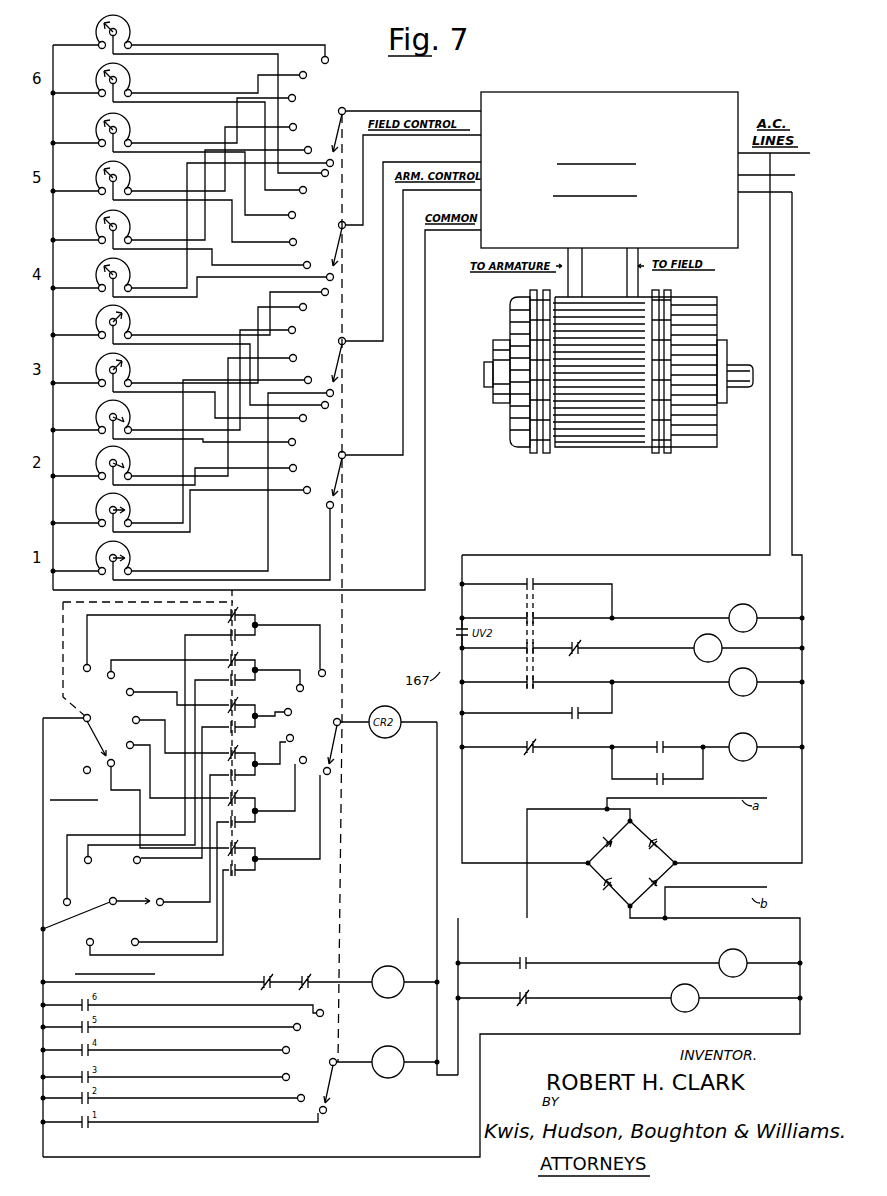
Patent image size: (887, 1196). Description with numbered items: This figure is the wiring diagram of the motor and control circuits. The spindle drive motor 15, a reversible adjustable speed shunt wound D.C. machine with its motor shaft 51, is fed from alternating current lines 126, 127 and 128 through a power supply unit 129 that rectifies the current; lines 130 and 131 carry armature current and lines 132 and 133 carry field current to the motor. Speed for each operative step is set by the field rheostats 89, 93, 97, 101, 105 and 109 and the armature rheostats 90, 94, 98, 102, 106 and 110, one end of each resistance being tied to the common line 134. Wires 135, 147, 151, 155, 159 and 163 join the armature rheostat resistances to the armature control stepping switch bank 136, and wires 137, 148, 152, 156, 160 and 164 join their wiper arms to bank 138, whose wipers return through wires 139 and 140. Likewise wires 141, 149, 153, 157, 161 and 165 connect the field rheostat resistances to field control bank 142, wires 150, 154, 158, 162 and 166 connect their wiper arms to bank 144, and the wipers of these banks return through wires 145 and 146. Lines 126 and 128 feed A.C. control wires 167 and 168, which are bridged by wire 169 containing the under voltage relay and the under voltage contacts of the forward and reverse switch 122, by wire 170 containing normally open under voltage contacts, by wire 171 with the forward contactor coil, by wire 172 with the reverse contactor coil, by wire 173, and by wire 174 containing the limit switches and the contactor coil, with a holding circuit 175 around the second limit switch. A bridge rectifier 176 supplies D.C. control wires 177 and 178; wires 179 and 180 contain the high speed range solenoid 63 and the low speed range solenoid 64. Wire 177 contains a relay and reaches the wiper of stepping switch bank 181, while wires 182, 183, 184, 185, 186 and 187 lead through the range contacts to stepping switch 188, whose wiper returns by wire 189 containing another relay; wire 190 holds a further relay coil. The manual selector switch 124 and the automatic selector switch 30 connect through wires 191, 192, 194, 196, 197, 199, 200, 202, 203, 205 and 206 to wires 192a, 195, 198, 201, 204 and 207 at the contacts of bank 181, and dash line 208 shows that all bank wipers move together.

The spindle drive motor 15 is at (623, 452).
The motor shaft 51 is at (743, 356).
The automatic operative step selector switch 30 is at (140, 916).
The high speed range solenoid 63 is at (740, 977).
The low speed range solenoid 64 is at (695, 1010).
The rheostat 89 is at (98, 508).
The rheostat 90 is at (98, 556).
The rheostat 93 is at (98, 415).
The rheostat 94 is at (98, 461).
The rheostat 97 is at (98, 320).
The rheostat 98 is at (98, 368).
The rheostat 101 is at (101, 225).
The rheostat 102 is at (101, 273).
The rheostat 105 is at (101, 128).
The rheostat 106 is at (101, 176).
The rheostat 109 is at (104, 26).
The rheostat 110 is at (104, 80).
The forward and reverse and neutral switch 122 is at (535, 600).
The manual selector switch 124 is at (120, 690).
The power supply line 126 is at (783, 155).
The power supply line 127 is at (790, 178).
The power supply line 128 is at (800, 194).
The power supply unit 129 is at (680, 100).
The line 130 is at (570, 276).
The line 131 is at (583, 294).
The line 132 is at (628, 300).
The line 133 is at (640, 292).
The common line 134 is at (425, 468).
The wire 135 is at (266, 557).
The automatic stepping switch bank 136 is at (325, 352).
The wire 137 is at (275, 578).
The automatic stepping switch bank 138 is at (325, 466).
The wire 139 is at (383, 292).
The wire 140 is at (403, 416).
The wire 141 is at (182, 516).
The stepping switch bank 142 is at (325, 120).
The stepping switch 144 is at (325, 236).
The wire 145 is at (372, 111).
The wire 146 is at (378, 136).
The wire 147 is at (150, 475).
The wire 148 is at (248, 512).
The wire 149 is at (150, 429).
The wire 150 is at (130, 441).
The wire 151 is at (150, 382).
The wire 152 is at (130, 394).
The wire 153 is at (150, 334).
The wire 154 is at (126, 346).
The wire 155 is at (148, 287).
The wire 156 is at (126, 299).
The wire 157 is at (148, 239).
The wire 158 is at (140, 251).
The wire 159 is at (150, 190).
The wire 160 is at (140, 202).
The wire 161 is at (170, 142).
The wire 162 is at (133, 154).
The wire 163 is at (173, 92).
The wire 164 is at (176, 104).
The wire 165 is at (186, 44).
The wire 166 is at (213, 57).
The wire 167 is at (768, 480).
The wire 168 is at (803, 466).
The wire 169 is at (638, 617).
The wire 170 is at (578, 584).
The wire 171 is at (622, 650).
The wire 172 is at (630, 682).
The wire 173 is at (616, 704).
The wire 174 is at (565, 748).
The holding circuit 175 is at (705, 775).
The bridge rectifier 176 is at (668, 842).
The wire 177 is at (437, 886).
The wire 178 is at (43, 925).
The wire 179 is at (582, 962).
The wire 180 is at (580, 998).
The automatic stepping switch bank 181 is at (318, 724).
The wire 182 is at (136, 1122).
The wire 183 is at (136, 1098).
The wire 184 is at (136, 1077).
The wire 185 is at (136, 1050).
The wire 186 is at (136, 1027).
The wire 187 is at (126, 1005).
The automatic stepping switch 188 is at (318, 1070).
The wire 189 is at (350, 1068).
The wire 190 is at (198, 980).
The wire 191 is at (112, 772).
The wire 192 is at (227, 922).
The wire 192a is at (262, 878).
The wire 194 is at (156, 941).
The wire 195 is at (262, 812).
The wire 196 is at (141, 718).
The wire 197 is at (160, 895).
The wire 198 is at (258, 762).
The wire 199 is at (220, 688).
The wire 200 is at (160, 858).
The wire 201 is at (270, 702).
The wire 202 is at (137, 660).
The wire 203 is at (138, 834).
The wire 204 is at (274, 668).
The wire 205 is at (112, 616).
The wire 206 is at (62, 848).
The wire 207 is at (274, 625).
The dash line 208 is at (342, 628).